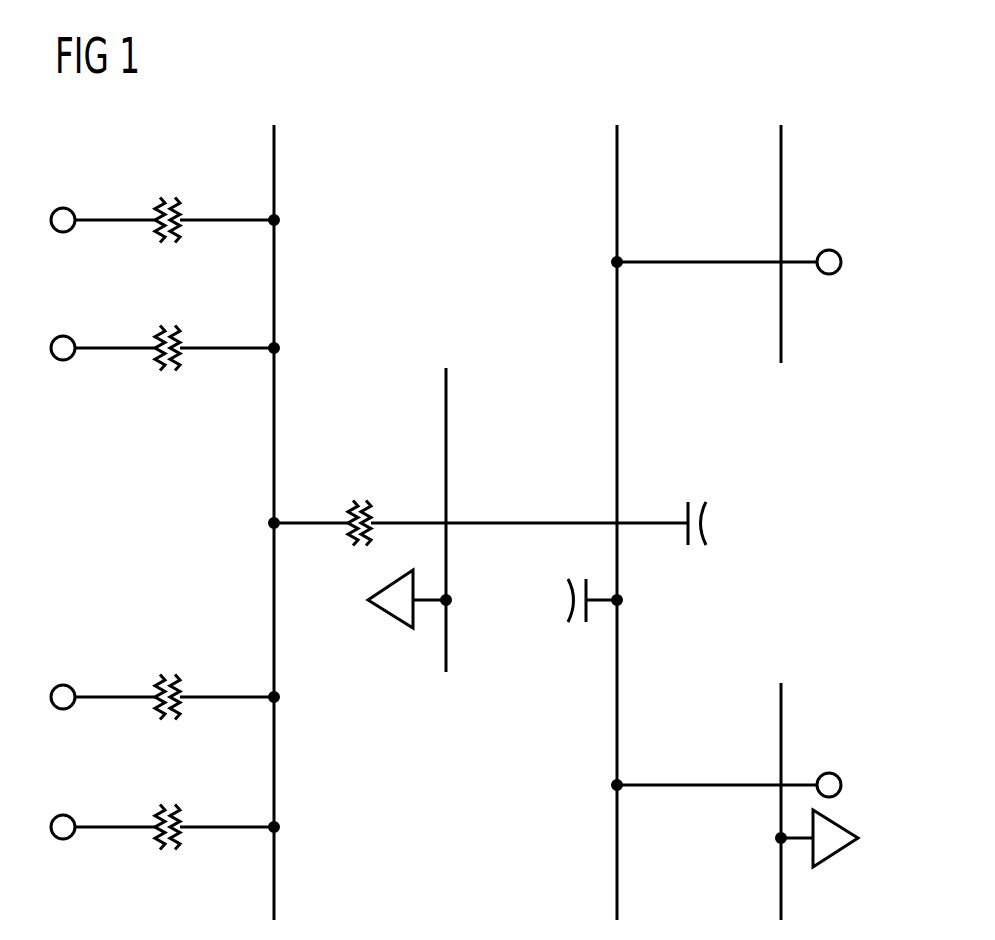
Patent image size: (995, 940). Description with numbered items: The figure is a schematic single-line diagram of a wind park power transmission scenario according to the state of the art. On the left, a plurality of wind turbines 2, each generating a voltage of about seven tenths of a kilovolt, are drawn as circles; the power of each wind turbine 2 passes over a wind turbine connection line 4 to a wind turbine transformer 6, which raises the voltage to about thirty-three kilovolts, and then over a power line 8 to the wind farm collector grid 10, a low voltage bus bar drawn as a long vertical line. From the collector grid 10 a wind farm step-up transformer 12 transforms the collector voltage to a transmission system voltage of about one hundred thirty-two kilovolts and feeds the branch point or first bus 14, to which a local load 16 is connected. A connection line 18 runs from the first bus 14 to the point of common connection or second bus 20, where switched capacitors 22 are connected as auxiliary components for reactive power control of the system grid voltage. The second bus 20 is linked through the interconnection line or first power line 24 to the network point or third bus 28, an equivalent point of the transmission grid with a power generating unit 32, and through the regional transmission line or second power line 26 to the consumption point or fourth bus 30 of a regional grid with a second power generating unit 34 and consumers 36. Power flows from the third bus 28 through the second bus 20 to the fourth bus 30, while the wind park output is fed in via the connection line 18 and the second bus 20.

The wind turbine 2 is at (63, 207).
The wind turbine connection line 4 is at (114, 219).
The wind turbine transformer 6 is at (170, 197).
The power line 8 is at (225, 219).
The wind farm collector grid 10 is at (274, 452).
The wind farm step-up transformer 12 is at (362, 500).
The first bus 14 is at (446, 447).
The local load 16 is at (386, 610).
The connection line 18 is at (524, 522).
The second bus 20 is at (617, 387).
The switched capacitors 22 is at (706, 521).
The first power line 24 is at (697, 261).
The second power line 26 is at (697, 784).
The third bus 28 is at (781, 175).
The fourth bus 30 is at (781, 725).
The power generating unit 32 is at (829, 250).
The second power generating unit 34 is at (829, 773).
The consumers 36 is at (838, 852).